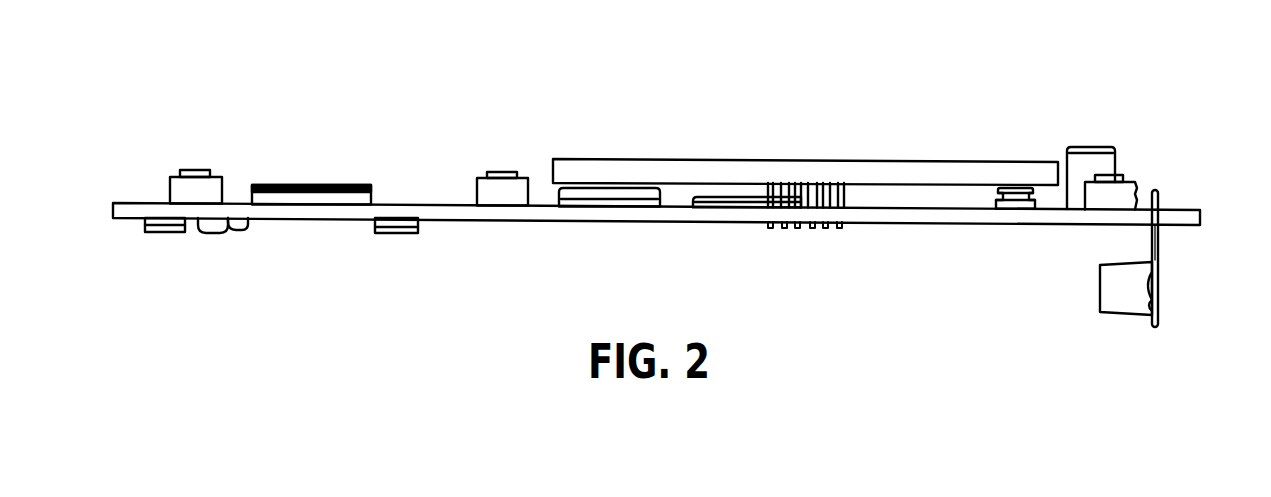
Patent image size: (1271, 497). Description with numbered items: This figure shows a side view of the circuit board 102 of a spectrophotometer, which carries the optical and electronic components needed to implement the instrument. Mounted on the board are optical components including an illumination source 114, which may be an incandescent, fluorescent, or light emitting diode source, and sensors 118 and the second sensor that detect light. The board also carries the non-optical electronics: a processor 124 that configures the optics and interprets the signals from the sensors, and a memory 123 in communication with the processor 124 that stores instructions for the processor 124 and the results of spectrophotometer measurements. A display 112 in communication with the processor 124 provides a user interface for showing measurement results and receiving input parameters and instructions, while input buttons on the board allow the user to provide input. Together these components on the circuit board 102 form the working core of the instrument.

The circuit board 102 is at (1116, 86).
The display 112 is at (668, 160).
The illumination source 114 is at (313, 185).
The sensor 118 is at (162, 232).
The memory 123 is at (732, 206).
The processor 124 is at (597, 204).